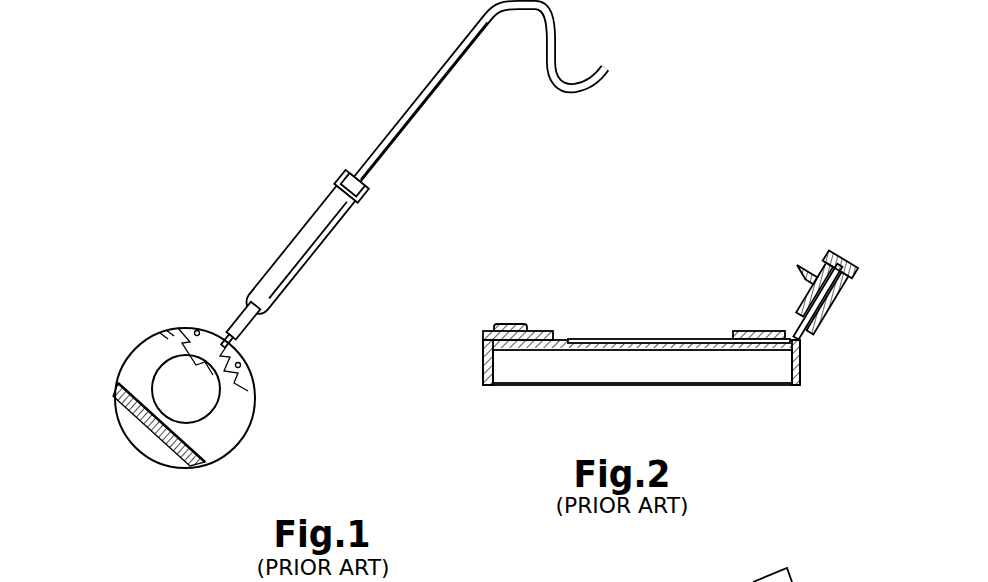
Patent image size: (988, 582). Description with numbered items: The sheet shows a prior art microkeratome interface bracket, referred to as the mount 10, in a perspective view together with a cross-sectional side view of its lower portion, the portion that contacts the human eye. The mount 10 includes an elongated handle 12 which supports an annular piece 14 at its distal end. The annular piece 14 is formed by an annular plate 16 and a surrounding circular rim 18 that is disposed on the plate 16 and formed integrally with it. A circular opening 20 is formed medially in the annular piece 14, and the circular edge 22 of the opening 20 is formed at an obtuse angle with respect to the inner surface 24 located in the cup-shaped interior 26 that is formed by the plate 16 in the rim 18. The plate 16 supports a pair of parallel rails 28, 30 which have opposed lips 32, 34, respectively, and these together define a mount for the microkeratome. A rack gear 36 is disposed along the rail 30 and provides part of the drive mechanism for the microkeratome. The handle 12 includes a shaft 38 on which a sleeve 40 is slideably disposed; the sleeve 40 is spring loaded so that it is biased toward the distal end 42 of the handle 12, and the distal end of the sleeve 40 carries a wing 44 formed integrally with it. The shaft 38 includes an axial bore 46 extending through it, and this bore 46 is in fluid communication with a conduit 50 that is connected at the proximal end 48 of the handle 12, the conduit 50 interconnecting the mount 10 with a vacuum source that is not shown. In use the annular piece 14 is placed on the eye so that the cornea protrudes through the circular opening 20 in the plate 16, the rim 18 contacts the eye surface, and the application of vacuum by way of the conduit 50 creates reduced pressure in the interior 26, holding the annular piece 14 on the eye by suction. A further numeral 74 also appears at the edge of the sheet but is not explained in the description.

In FIG. 1, the mount 10 is at (454, 190).
In FIG. 1, the elongated handle 12 is at (328, 192).
In FIG. 1, the annular piece 14 is at (252, 381).
In FIG. 1, the annular plate 16 is at (222, 430).
In FIG. 2, the annular plate 16 is at (540, 355).
In FIG. 1, the circular rim 18 is at (205, 458).
In FIG. 2, the circular rim 18 is at (483, 362).
In FIG. 1, the circular opening 20 is at (186, 378).
In FIG. 2, the circular opening 20 is at (632, 331).
In FIG. 2, the circular edge 22 is at (695, 354).
In FIG. 2, the inner surface 24 is at (752, 352).
In FIG. 2, the cup-shaped interior 26 is at (654, 380).
In FIG. 1, the rail 28 is at (200, 327).
In FIG. 2, the rail 28 is at (765, 335).
In FIG. 1, the rail 30 is at (118, 383).
In FIG. 2, the rail 30 is at (537, 330).
In FIG. 2, the lip 32 is at (733, 333).
In FIG. 2, the lip 34 is at (550, 336).
In FIG. 1, the rack gear 36 is at (155, 450).
In FIG. 2, the rack gear 36 is at (505, 323).
In FIG. 1, the shaft 38 is at (418, 117).
In FIG. 2, the shaft 38 is at (814, 262).
In FIG. 1, the sleeve 40 is at (306, 254).
In FIG. 2, the sleeve 40 is at (840, 292).
In FIG. 1, the distal end 42 is at (243, 363).
In FIG. 2, the distal end 42 is at (800, 340).
In FIG. 1, the wing 44 is at (245, 320).
In FIG. 2, the wing 44 is at (790, 290).
In FIG. 2, the axial bore 46 is at (808, 326).
In FIG. 1, the proximal end 48 is at (460, 60).
In FIG. 1, the conduit 50 is at (552, 22).
In FIG. 2, the element 74 is at (833, 581).